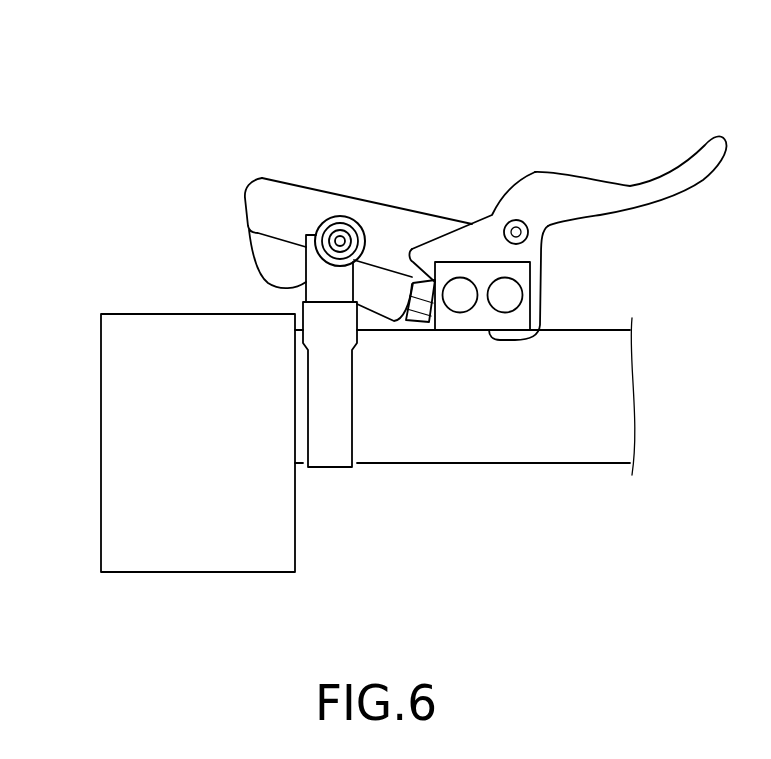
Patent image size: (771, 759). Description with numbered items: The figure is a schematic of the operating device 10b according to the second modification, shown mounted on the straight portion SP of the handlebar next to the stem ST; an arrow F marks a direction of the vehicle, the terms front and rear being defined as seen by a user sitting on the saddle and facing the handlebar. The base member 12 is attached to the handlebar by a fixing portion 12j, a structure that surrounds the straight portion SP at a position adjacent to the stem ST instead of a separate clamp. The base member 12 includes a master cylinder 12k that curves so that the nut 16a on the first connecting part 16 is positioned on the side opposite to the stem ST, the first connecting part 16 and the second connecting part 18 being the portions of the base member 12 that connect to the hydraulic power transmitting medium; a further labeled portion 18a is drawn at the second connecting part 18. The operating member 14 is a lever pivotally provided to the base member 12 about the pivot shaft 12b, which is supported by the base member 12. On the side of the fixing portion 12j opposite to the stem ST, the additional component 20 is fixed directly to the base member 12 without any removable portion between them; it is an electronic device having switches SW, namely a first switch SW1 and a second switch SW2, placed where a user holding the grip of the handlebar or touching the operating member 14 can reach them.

The bicycle operating device 10b is at (378, 114).
The base member 12 is at (535, 251).
The pivot shaft 12b is at (518, 230).
The fixing portion 12j is at (323, 311).
The master cylinder 12k is at (281, 183).
The operating member 14 is at (648, 194).
The first connecting part 16 is at (382, 302).
The nut 16a is at (427, 306).
The second connecting part 18 is at (343, 221).
The pivot boss 18a is at (357, 232).
The additional component 20 is at (525, 273).
The switches SW is at (537, 128).
The first switch SW1 is at (460, 287).
The second switch SW2 is at (502, 287).
The straight portion SP is at (497, 447).
The stem ST is at (102, 356).
The forward direction F is at (66, 55).